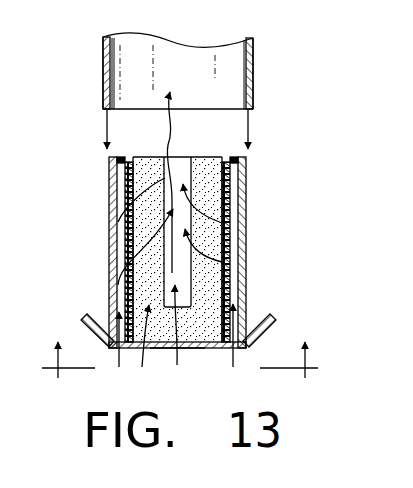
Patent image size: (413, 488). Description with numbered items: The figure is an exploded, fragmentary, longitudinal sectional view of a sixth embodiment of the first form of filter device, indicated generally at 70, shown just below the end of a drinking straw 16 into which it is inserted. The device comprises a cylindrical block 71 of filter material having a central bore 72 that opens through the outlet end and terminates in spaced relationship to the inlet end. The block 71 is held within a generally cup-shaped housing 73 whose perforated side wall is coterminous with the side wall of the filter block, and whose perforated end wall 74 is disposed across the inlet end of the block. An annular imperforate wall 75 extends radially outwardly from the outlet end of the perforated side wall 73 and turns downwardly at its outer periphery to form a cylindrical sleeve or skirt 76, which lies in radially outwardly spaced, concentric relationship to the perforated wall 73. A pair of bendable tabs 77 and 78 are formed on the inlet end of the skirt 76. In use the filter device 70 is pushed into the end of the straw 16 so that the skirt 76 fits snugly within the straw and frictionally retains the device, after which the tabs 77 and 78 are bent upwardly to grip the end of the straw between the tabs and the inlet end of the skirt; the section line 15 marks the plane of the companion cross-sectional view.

The section line 15- 15 is at (183, 362).
The straw 16 is at (103, 80).
The filter device 70 is at (192, 204).
The cylindrical block of filter material 71 is at (213, 193).
The central bore 72 is at (184, 176).
The cup-shaped housing 73 is at (232, 253).
The perforated end wall 74 is at (178, 348).
The annular imperforate wall 75 is at (112, 135).
The cylindrical sleeve or skirt 76 is at (246, 291).
The bendable tab 77 is at (92, 330).
The bendable tab 78 is at (268, 328).